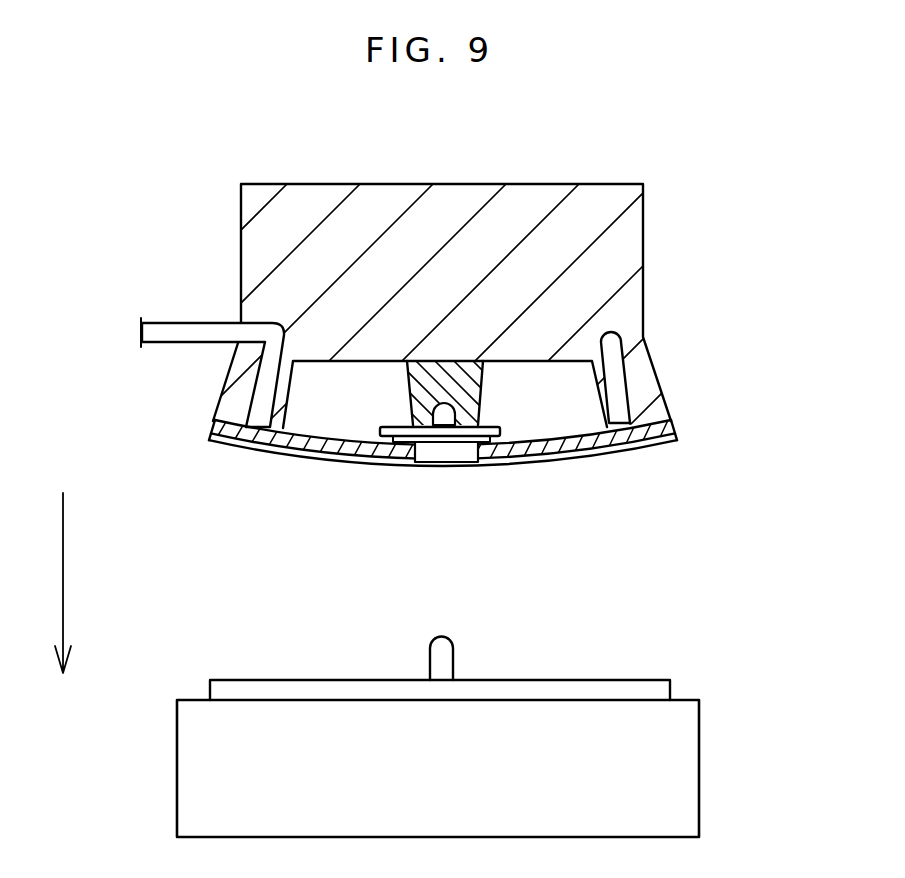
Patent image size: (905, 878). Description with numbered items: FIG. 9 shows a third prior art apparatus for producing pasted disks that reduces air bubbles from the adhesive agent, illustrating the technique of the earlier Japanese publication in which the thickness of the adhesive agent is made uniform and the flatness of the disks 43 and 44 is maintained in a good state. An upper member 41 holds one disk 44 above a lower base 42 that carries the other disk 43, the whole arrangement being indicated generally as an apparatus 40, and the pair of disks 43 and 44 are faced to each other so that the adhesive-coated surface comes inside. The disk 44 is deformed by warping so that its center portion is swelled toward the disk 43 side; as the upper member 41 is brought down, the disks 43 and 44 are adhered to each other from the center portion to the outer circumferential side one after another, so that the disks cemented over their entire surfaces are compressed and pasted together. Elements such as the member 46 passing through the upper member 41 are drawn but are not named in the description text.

The assembly 40 is at (722, 510).
The upper block 41 is at (610, 267).
The base 42 is at (663, 762).
The disk 43 is at (530, 679).
The disk 44 is at (338, 463).
The tube 46 is at (185, 332).